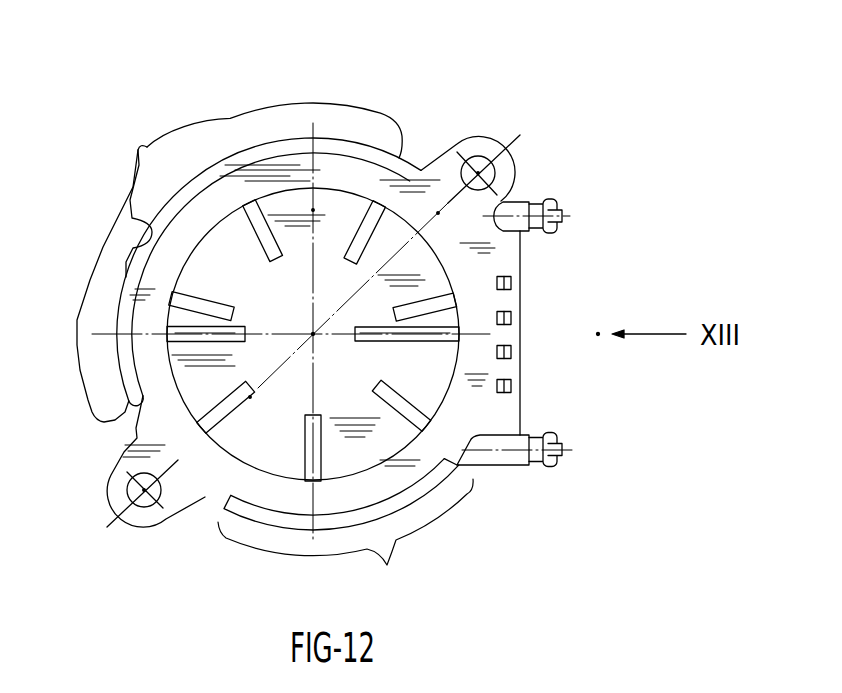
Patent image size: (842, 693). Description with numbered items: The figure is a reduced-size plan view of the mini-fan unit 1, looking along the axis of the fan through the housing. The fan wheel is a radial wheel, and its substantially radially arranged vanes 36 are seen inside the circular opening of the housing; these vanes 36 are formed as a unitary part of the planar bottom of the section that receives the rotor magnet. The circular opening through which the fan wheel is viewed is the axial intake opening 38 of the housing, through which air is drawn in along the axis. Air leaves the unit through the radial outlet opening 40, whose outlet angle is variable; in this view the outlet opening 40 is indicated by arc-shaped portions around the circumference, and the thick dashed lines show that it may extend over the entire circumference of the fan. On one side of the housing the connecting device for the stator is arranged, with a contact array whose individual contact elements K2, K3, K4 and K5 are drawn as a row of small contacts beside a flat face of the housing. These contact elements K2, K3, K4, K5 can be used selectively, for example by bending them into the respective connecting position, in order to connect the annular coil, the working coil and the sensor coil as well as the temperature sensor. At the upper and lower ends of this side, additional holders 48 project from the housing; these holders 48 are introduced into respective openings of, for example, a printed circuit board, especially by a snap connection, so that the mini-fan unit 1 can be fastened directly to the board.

The mini-fan unit 1 is at (474, 118).
The vanes 36 is at (268, 204).
The axial intake opening 38 is at (258, 443).
The radial outlet opening 40 is at (275, 352).
The holders 48 is at (541, 205).
The contact element K2 is at (529, 386).
The contact element K3 is at (529, 352).
The contact element K4 is at (529, 318).
The contact element K5 is at (529, 283).